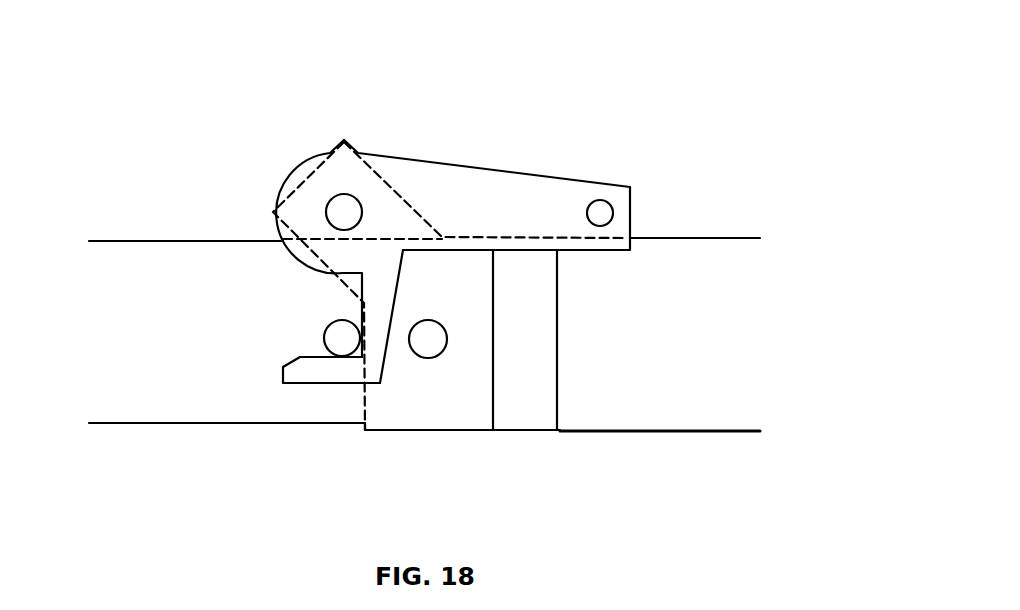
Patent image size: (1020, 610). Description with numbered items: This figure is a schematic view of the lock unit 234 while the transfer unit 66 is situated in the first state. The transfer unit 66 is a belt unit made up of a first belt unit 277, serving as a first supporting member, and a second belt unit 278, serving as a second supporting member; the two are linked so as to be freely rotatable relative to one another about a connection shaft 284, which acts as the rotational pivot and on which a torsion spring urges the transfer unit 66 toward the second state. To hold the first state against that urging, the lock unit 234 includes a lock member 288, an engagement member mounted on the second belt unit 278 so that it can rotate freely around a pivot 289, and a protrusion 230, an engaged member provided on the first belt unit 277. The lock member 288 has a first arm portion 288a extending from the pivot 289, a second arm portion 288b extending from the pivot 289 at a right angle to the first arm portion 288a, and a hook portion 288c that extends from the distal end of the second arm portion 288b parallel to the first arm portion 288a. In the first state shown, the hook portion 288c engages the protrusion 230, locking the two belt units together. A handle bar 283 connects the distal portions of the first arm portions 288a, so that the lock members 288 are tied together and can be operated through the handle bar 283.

The transfer unit 66 is at (622, 71).
The lock unit 234 is at (263, 56).
The protrusion 230 is at (334, 334).
The lock member 288 is at (454, 283).
The first arm portion 288a is at (473, 165).
The second arm portion 288b is at (393, 306).
The hook portion 288c is at (338, 384).
The pivot 289 is at (340, 207).
The handle bar 283 is at (601, 210).
The connection shaft 284 is at (432, 358).
The first belt unit 277 is at (165, 235).
The second belt unit 278 is at (690, 234).